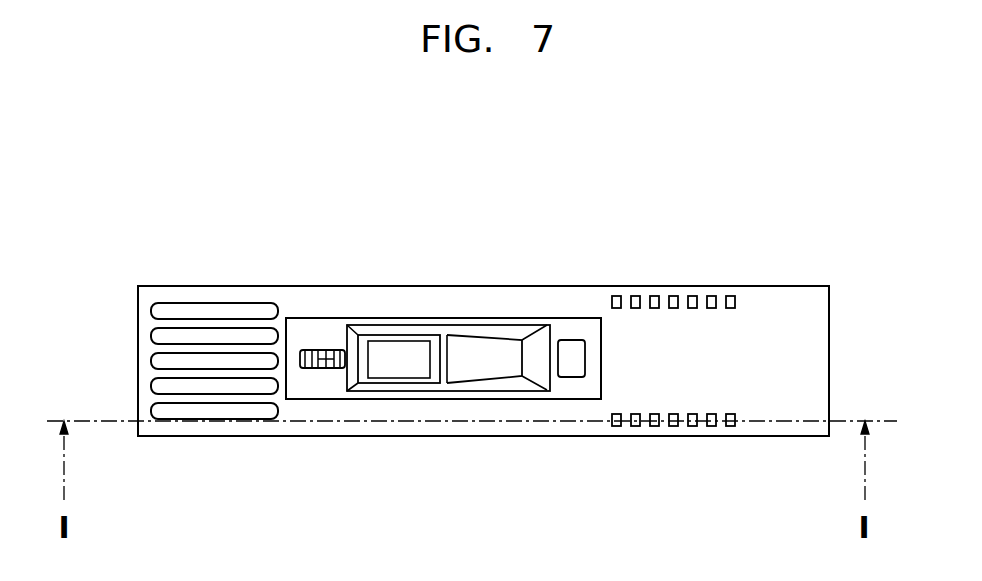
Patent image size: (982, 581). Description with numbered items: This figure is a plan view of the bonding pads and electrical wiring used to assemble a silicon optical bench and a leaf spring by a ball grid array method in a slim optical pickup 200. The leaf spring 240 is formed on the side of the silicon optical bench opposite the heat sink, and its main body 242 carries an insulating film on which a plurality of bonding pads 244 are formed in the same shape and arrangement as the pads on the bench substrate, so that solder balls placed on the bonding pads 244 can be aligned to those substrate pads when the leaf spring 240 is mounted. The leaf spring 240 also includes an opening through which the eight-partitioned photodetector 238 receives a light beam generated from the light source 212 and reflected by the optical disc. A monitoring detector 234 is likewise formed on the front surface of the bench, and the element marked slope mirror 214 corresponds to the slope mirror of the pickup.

The slim optical pickup 200 is at (529, 317).
The leaf spring 240 is at (217, 285).
The eight-partitioned photodetector 238 is at (325, 339).
The light source 212 is at (397, 350).
The slope mirror 214 is at (533, 350).
The monitoring detector 234 is at (583, 341).
The main body 242 is at (815, 345).
The bonding pads 244 is at (612, 424).